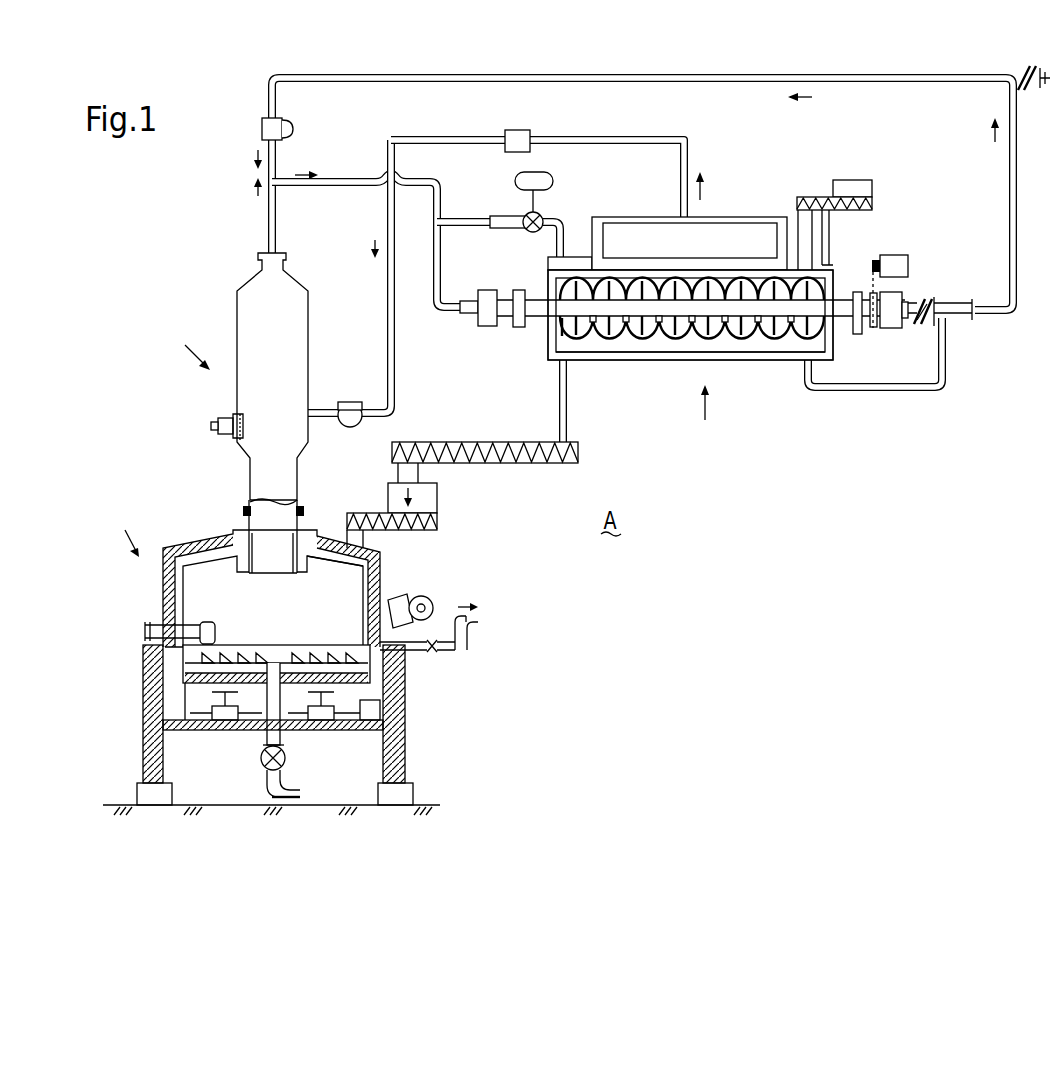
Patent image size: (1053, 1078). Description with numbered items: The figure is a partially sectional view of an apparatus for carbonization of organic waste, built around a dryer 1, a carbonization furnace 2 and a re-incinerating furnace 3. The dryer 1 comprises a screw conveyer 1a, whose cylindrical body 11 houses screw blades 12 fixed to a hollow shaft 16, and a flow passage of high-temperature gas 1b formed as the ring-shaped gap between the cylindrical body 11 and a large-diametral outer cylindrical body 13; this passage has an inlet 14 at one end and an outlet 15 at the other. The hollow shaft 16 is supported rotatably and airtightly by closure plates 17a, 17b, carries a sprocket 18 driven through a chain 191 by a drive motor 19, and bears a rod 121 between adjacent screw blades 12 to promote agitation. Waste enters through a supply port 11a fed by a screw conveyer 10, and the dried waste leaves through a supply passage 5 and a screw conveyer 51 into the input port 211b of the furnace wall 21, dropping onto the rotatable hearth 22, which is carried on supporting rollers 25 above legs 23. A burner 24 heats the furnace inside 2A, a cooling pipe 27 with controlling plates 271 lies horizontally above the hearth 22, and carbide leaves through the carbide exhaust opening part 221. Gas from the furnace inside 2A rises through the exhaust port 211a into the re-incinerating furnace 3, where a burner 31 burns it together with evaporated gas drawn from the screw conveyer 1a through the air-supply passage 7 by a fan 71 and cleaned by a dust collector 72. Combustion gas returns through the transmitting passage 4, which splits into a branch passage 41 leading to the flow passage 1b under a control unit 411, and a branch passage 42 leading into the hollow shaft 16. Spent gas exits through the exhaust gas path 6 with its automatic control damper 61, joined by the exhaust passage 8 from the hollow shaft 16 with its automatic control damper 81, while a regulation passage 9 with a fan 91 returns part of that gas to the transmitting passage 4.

The dryer 1 is at (690, 359).
The screw conveyer 1a is at (712, 270).
The flow passage of high-temperature gas 1b is at (636, 352).
The carbonization furnace 2 is at (271, 659).
The furnace inside 2A is at (215, 550).
The re-incinerating furnace 3 is at (238, 413).
The transmitting passage 4 is at (330, 186).
The supply passage 5 is at (570, 414).
The exhaust gas path 6 is at (1017, 222).
The air-supply passage 7 is at (387, 337).
The exhaust passage 8 is at (915, 302).
The regulation passage 9 is at (641, 77).
The screw conveyer 10 is at (850, 180).
The cylindrical body 11 is at (740, 348).
The supply port 11a is at (806, 270).
The screw blades 12 is at (783, 348).
The large-diametral outer cylindrical body 13 is at (668, 258).
The inlet 14 is at (556, 262).
The outlet 15 is at (809, 380).
The hollow shaft 16 is at (672, 345).
The closure plate 17a is at (548, 287).
The closure plate 17b is at (836, 267).
The sprocket 18 is at (877, 330).
The drive motor 19 is at (893, 255).
The chain 191 is at (873, 292).
The furnace wall 21 is at (178, 548).
The hearth 22 is at (190, 688).
The legs 23 is at (143, 712).
The burner 24 is at (420, 596).
The supporting rollers 25 is at (225, 722).
The cooling pipe 27 is at (282, 656).
The burner 31 is at (222, 440).
The branch passage 41 is at (456, 220).
The branch passage 42 is at (441, 260).
The screw conveyer 51 is at (487, 465).
The automatic control damper 61 is at (1027, 72).
The fan 71 is at (349, 402).
The dust collector 72 is at (519, 128).
The automatic control damper 81 is at (924, 326).
The fan 91 is at (262, 128).
The rod 121 is at (606, 345).
The exhaust port 211a is at (272, 568).
The input port 211b is at (356, 566).
The carbide exhaust opening part 221 is at (272, 663).
The controlling plates 271 is at (240, 654).
The control unit 411 is at (543, 180).